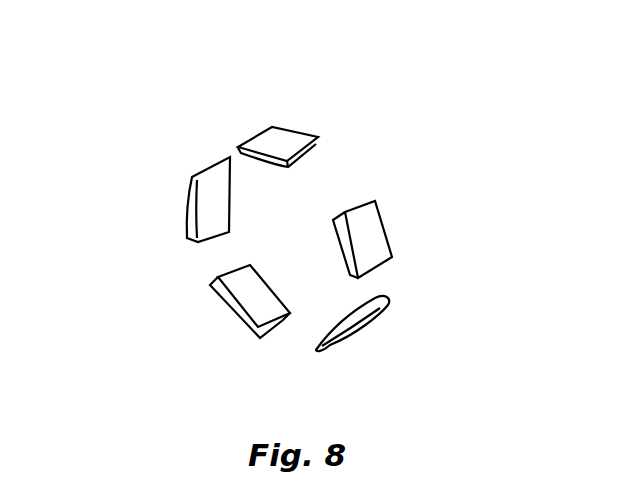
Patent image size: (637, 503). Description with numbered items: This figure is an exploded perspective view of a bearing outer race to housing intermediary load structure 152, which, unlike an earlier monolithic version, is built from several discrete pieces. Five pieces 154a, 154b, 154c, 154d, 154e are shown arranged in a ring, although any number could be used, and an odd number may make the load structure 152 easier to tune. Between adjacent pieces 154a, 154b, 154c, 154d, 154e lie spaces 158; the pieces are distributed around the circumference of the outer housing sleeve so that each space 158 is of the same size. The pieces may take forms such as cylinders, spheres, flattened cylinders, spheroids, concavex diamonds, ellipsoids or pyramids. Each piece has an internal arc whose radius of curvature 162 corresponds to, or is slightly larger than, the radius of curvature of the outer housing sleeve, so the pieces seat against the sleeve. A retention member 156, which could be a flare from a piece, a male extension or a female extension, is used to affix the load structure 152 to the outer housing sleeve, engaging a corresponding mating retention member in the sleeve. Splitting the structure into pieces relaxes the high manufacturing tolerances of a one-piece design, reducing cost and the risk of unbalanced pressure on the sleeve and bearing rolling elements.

The bearing outer race to housing intermediary load structure 152 is at (370, 100).
The piece 154a is at (285, 140).
The piece 154b is at (370, 237).
The piece 154c is at (365, 322).
The piece 154d is at (243, 307).
The piece 154e is at (203, 208).
The retention member 156 is at (321, 157).
The space 158 is at (232, 145).
The radius of curvature 162 is at (267, 282).